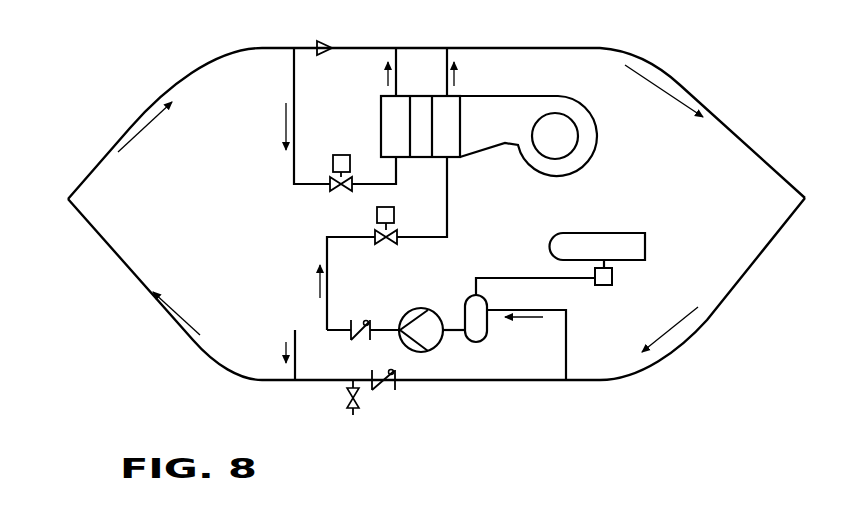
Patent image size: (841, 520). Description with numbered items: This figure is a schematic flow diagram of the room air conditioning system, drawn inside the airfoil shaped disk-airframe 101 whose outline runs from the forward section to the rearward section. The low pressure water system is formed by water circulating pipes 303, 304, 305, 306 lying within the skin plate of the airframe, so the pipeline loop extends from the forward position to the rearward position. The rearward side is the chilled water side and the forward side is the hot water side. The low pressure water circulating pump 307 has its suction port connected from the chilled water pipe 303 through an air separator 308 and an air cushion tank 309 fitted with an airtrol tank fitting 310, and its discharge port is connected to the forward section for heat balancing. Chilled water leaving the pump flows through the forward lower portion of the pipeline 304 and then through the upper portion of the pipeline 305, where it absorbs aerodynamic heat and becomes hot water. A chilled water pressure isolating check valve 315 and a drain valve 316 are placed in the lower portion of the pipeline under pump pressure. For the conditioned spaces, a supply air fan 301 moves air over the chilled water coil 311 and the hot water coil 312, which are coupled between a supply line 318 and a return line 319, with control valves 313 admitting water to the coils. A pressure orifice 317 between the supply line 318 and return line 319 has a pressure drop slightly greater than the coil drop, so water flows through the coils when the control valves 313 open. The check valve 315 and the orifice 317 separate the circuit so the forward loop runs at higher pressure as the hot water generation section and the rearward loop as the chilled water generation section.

The vehicle hull 101 is at (424, 211).
The supply air fan 301 is at (528, 150).
The chilled water pipe 303 is at (725, 291).
The forward lower-portion pipeline 304 is at (207, 352).
The upper portion pipeline 305 is at (213, 68).
The water circulating pipe 306 is at (650, 67).
The low pressure water circulating pump 307 is at (432, 318).
The air separator 308 is at (488, 338).
The air cushion tank 309 is at (645, 246).
The airtrol tank fitting 310 is at (608, 286).
The chilled water coil 311 is at (452, 158).
The hot water coil 312 is at (381, 127).
The control valves 313 is at (373, 232).
The chilled water pressure isolating check valve 315 is at (387, 392).
The drain valve 316 is at (350, 417).
The pressure orifice 317 is at (321, 43).
The supply line 318 is at (294, 97).
The return line 319 is at (421, 72).